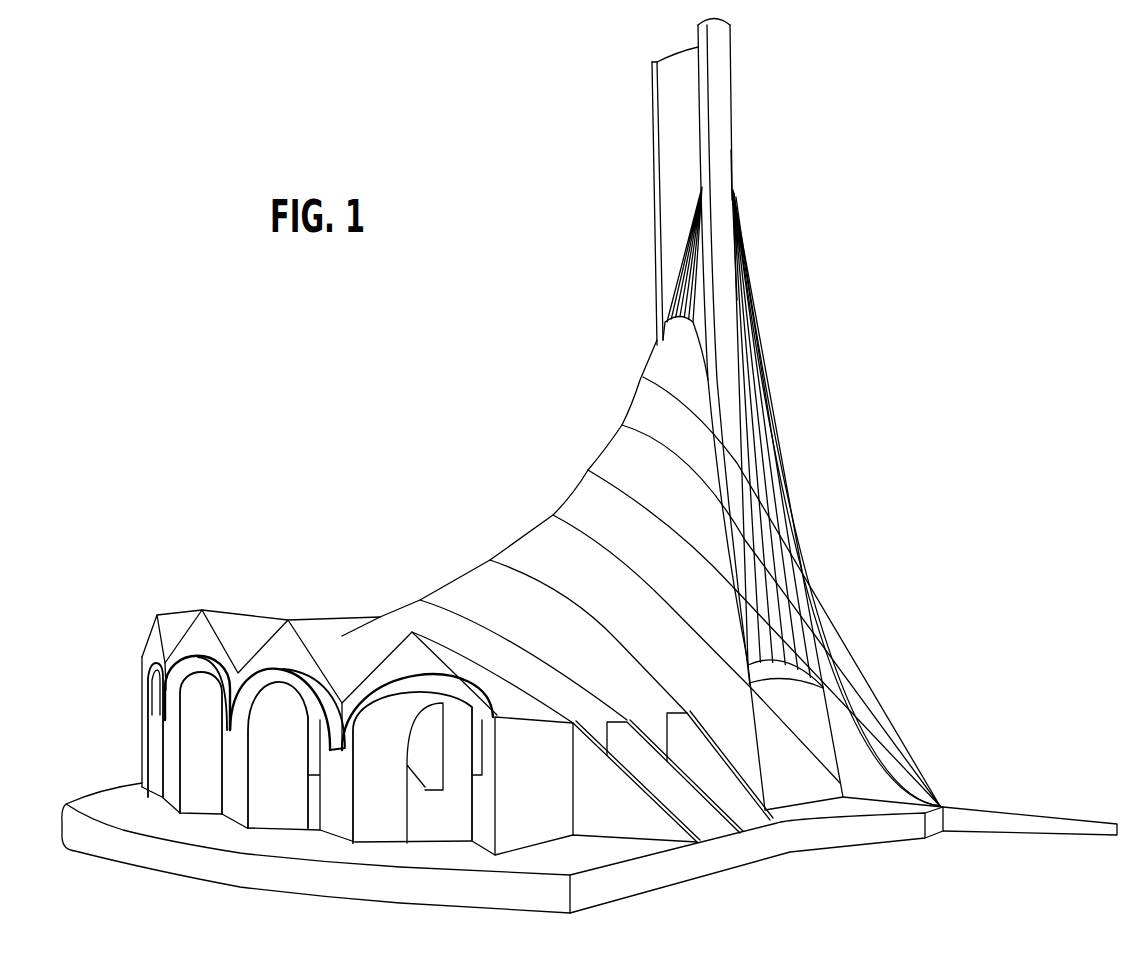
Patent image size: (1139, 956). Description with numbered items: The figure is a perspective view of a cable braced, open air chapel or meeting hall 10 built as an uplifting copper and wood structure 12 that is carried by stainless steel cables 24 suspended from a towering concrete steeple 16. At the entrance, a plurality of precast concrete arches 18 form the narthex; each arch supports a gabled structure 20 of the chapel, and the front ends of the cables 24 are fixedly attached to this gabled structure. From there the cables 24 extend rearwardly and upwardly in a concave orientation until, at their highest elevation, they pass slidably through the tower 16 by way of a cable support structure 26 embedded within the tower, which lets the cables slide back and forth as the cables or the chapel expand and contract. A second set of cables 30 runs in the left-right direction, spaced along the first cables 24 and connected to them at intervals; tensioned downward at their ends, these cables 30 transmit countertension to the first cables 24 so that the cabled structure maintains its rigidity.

The open air chapel or meeting hall 10 is at (375, 513).
The copper and wood structure 12 is at (540, 540).
The concrete steeple 16 is at (715, 130).
The precast concrete arches 18 is at (262, 818).
The gabled roof sections 20 is at (410, 650).
The stainless steel cables 24 is at (687, 292).
The cable support structure 26 is at (718, 187).
The second set of cables 30 is at (773, 590).